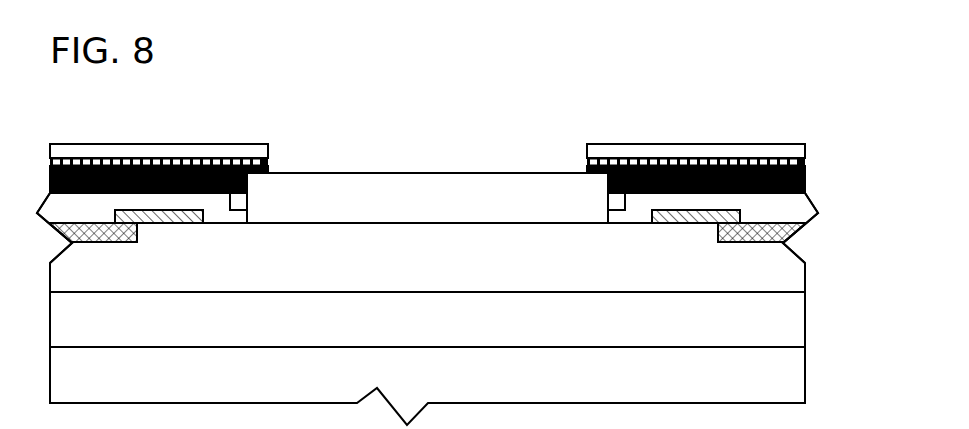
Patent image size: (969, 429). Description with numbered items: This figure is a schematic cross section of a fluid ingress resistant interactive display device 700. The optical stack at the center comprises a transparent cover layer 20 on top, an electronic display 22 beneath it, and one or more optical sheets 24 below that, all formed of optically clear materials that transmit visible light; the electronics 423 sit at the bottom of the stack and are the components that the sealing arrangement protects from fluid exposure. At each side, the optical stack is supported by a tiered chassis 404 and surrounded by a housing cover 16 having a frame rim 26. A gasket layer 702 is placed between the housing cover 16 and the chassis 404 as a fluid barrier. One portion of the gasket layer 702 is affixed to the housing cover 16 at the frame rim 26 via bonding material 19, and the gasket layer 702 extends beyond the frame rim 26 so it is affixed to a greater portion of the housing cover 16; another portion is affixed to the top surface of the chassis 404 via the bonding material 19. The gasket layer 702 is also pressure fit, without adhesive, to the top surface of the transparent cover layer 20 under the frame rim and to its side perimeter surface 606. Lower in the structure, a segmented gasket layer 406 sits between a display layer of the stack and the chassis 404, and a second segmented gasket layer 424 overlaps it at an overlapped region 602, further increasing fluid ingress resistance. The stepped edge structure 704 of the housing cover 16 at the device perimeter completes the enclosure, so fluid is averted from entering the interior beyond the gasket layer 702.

The fluid ingress resistant interactive display device 700 is at (575, 72).
The transparent cover layer 20 is at (565, 208).
The electronic display 22 is at (532, 268).
The optical sheets 24 is at (510, 329).
The electronics 423 is at (503, 384).
The housing cover 16 is at (120, 144).
The bonding material 19 is at (177, 160).
The gasket layer 702 is at (131, 190).
The chassis 404 is at (103, 218).
The segmented gasket layer 406 is at (186, 224).
The overlapped region 602 is at (143, 228).
The segmented gasket layer 424 is at (120, 243).
The housing edge 704 is at (59, 204).
The frame rim 26 is at (255, 134).
The side perimeter surface 606 is at (252, 186).